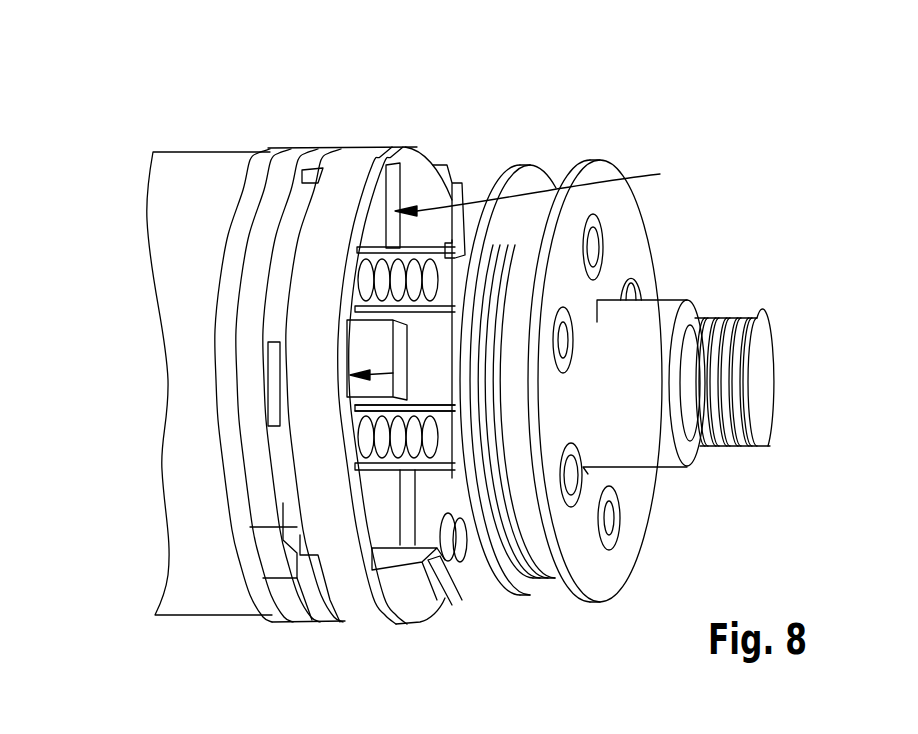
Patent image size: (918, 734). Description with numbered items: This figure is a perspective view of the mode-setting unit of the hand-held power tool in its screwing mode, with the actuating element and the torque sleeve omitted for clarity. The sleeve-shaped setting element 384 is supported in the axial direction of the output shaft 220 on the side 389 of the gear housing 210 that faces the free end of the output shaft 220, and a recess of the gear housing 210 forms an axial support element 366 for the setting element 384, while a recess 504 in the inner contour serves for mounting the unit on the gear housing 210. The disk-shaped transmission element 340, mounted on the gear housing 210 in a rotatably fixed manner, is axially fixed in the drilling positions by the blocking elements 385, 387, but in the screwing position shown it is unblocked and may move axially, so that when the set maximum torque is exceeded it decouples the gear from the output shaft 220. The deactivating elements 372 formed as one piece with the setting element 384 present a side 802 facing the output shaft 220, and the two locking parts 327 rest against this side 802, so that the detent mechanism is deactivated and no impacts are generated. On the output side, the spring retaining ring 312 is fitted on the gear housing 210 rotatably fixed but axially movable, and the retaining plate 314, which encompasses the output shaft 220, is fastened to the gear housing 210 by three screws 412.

The gear housing 210 is at (157, 218).
The transmission element 340 is at (280, 177).
The blocking element 387 is at (312, 160).
The setting element 384 is at (367, 157).
The deactivating element 372 is at (392, 185).
The locking part 327 is at (450, 200).
The spring retaining ring 312 is at (520, 172).
The retaining plate 314 is at (628, 212).
The screw 412 is at (633, 272).
The side of deactivating element 802 is at (549, 185).
The output shaft 220 is at (745, 318).
The axial support element 366 is at (362, 336).
The recess 504 is at (393, 373).
The blocking element 385 is at (277, 375).
The side of gear housing 389 is at (357, 418).